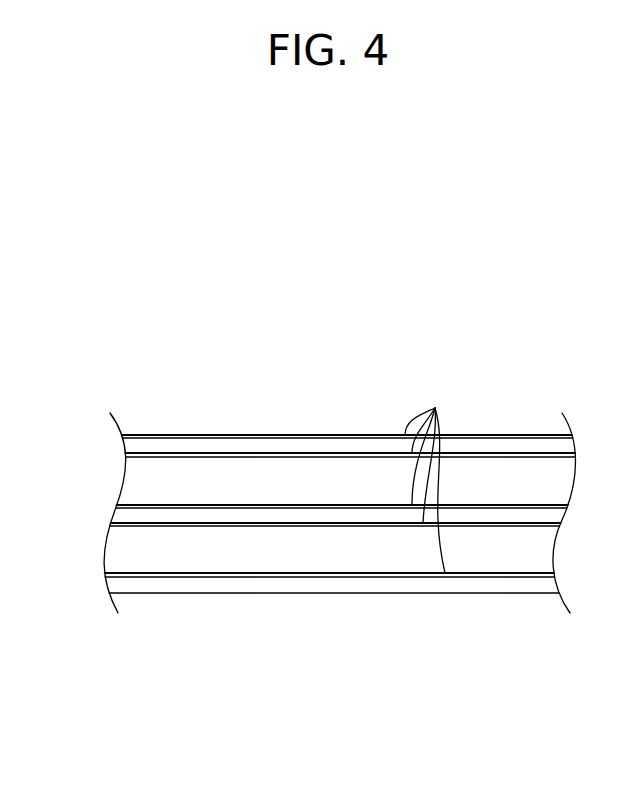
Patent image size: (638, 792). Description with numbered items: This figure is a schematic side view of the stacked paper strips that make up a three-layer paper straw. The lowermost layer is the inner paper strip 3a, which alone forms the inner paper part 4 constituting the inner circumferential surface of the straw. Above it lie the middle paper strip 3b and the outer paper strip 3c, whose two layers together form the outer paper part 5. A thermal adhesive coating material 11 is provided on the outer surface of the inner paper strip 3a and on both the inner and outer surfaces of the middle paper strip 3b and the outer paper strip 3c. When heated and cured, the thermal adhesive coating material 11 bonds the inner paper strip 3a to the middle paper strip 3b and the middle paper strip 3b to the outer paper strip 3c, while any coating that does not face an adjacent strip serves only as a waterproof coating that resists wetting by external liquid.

The inner paper strip 3a is at (172, 602).
The middle paper strip 3b is at (270, 495).
The outer paper strip 3c is at (198, 426).
The inner paper part 4 is at (73, 552).
The outer paper part 5 is at (73, 435).
The thermal adhesive coating material 11 is at (427, 476).